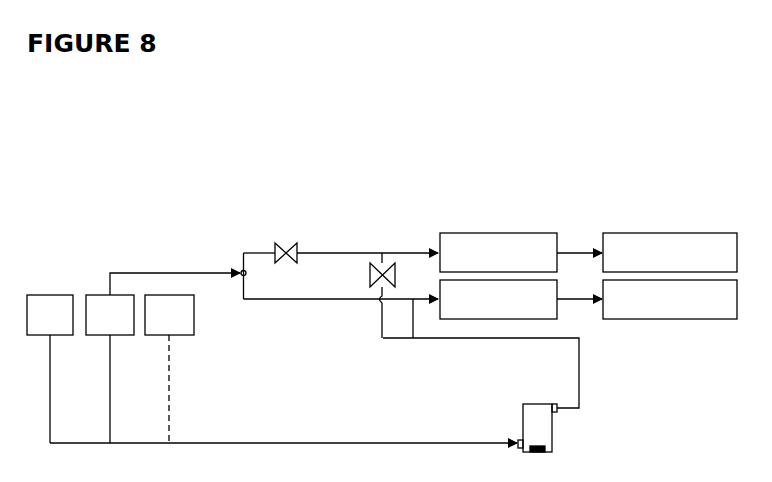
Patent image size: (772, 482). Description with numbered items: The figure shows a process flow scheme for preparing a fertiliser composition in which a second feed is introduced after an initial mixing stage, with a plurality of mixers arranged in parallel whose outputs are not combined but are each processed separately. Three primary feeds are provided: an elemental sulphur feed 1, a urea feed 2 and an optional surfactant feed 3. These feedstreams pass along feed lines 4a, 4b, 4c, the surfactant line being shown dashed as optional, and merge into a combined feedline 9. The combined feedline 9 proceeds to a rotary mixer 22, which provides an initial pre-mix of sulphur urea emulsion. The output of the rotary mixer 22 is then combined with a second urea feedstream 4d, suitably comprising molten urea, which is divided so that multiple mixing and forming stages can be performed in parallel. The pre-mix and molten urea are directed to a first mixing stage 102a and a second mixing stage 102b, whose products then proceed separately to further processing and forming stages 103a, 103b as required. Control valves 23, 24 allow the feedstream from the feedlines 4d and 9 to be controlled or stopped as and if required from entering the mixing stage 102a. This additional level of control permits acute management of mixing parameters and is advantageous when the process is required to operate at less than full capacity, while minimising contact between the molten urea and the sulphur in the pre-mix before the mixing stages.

The elemental sulphur feed 1 is at (50, 315).
The urea feed 2 is at (110, 315).
The surfactant feed 3 is at (169, 315).
The feed line 4a is at (38, 389).
The feed line 4b is at (102, 389).
The feed line 4c is at (173, 389).
The second urea feedstream 4d is at (178, 271).
The combined feedline 9 is at (283, 455).
The rotary mixer 22 is at (507, 401).
The control valve 23 is at (306, 246).
The control valve 24 is at (418, 295).
The mixing stage 102a is at (498, 252).
The mixing stage 102b is at (498, 299).
The processing and forming stage 103a is at (670, 252).
The processing and forming stage 103b is at (670, 299).